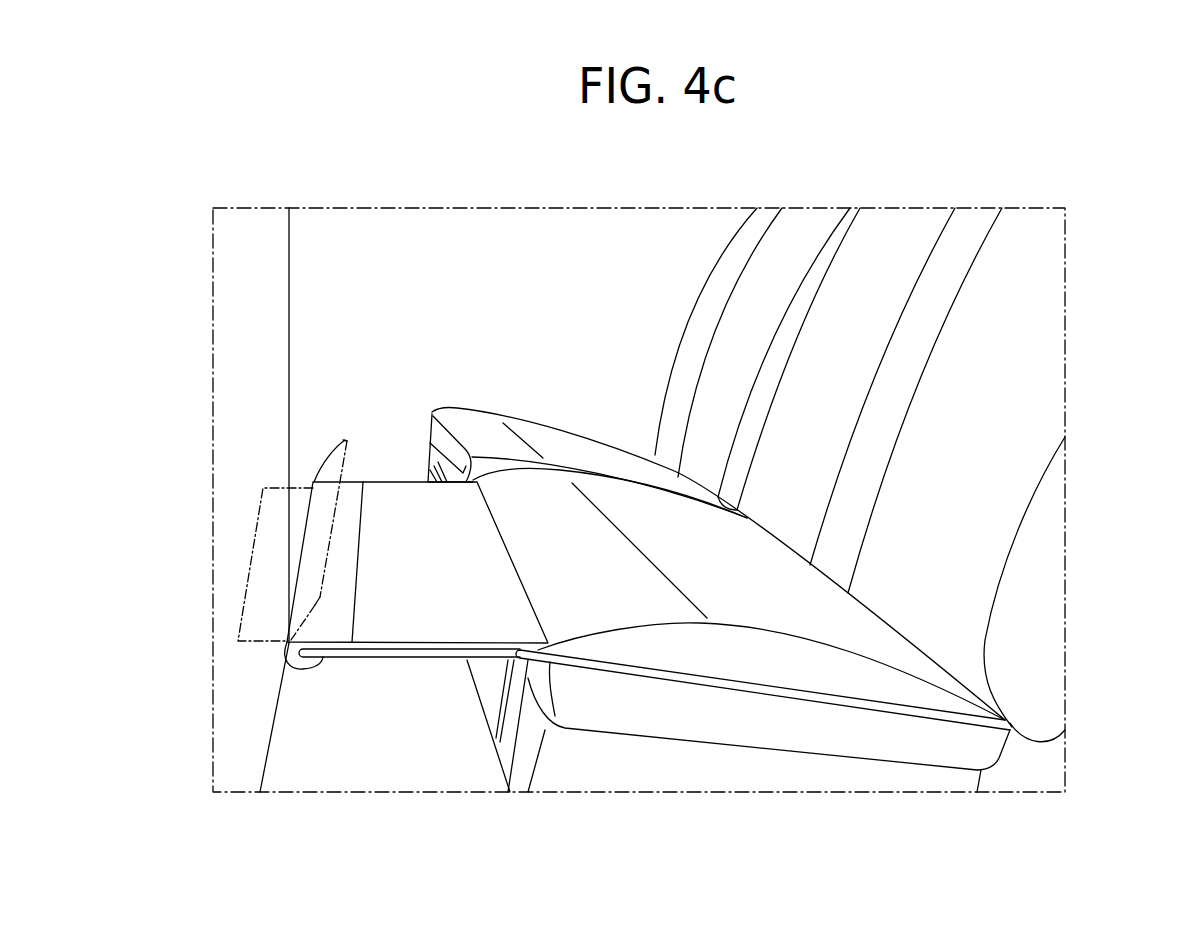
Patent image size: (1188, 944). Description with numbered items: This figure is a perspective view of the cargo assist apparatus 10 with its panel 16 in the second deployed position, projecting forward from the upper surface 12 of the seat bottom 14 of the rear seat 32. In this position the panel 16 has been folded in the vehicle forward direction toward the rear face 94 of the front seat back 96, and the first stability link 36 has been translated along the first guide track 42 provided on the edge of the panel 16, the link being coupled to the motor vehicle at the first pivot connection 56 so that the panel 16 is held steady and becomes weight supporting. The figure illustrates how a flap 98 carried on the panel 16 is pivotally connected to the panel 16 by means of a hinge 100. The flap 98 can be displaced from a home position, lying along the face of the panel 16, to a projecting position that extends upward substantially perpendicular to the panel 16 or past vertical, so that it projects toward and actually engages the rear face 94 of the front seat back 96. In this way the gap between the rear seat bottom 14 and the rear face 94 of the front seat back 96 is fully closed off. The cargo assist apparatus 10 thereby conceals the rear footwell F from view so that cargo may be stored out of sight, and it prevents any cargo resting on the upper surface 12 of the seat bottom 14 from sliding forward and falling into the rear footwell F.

The cargo assist apparatus 10 is at (338, 730).
The upper surface 12 is at (650, 530).
The seat bottom 14 is at (747, 723).
The panel 16 is at (408, 530).
The rear seat 32 is at (1073, 272).
The first stability link 36 is at (908, 715).
The first guide track 42 is at (408, 650).
The first pivot connection 56 is at (1010, 723).
The rear face 94 is at (243, 560).
The front seat back 96 is at (242, 368).
The flap 98 is at (328, 463).
The hinge 100 is at (277, 652).
The rear footwell F is at (437, 750).